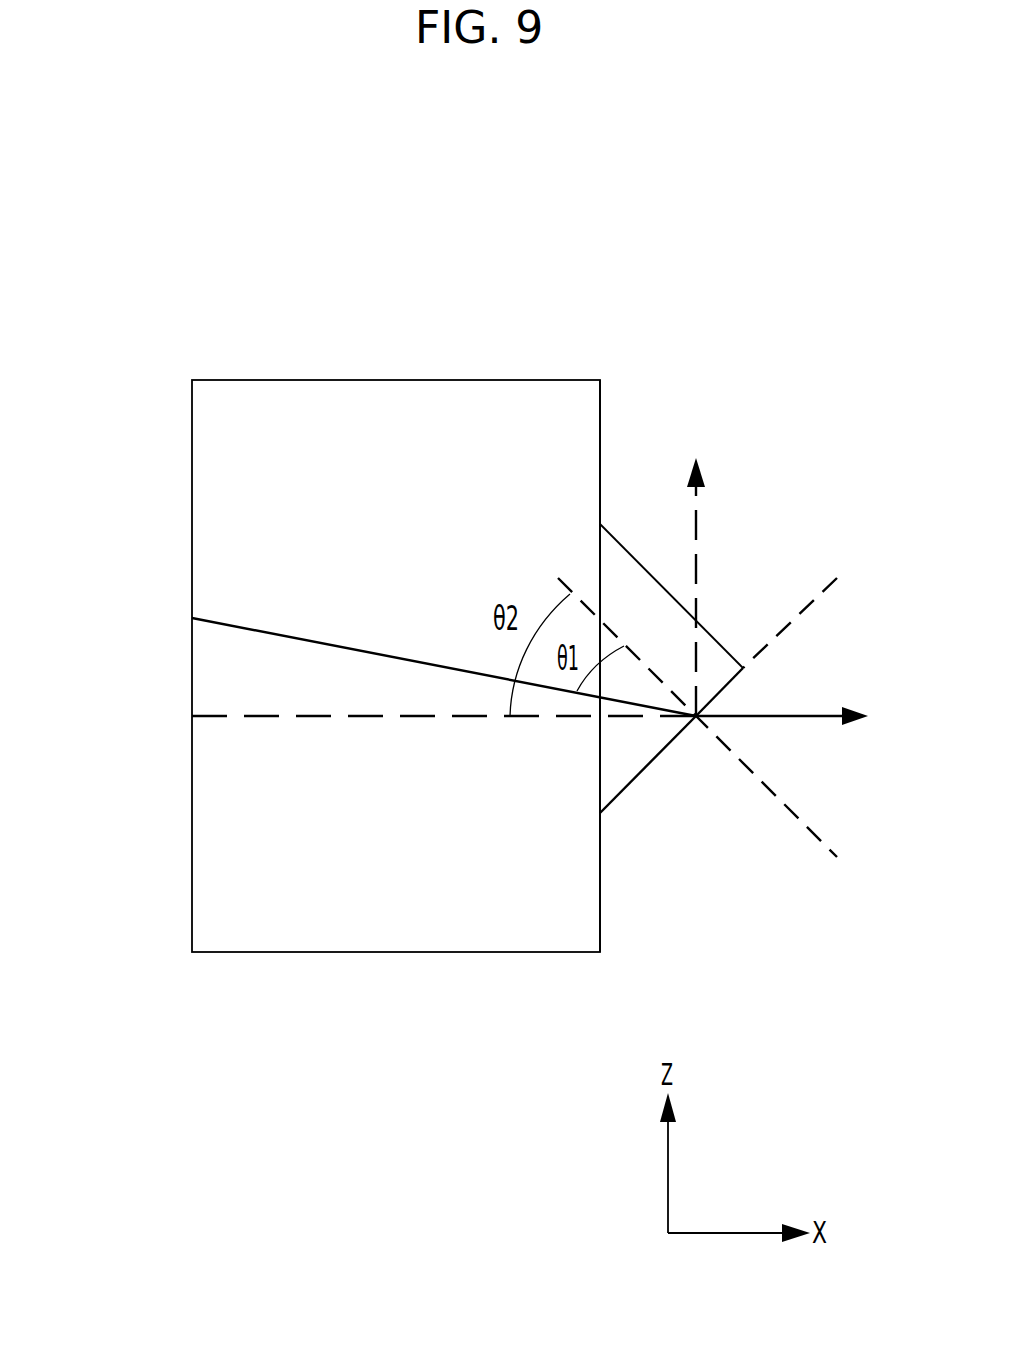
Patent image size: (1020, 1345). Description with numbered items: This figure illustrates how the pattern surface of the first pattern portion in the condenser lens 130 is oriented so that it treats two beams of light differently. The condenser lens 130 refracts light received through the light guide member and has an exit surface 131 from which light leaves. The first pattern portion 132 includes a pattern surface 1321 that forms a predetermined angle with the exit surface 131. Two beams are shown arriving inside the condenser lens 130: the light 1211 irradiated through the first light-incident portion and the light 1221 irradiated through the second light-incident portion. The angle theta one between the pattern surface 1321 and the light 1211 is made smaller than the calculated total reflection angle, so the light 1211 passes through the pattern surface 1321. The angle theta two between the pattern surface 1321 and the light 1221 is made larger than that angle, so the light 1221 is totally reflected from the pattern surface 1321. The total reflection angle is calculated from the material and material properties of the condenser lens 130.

The condenser lens 130 is at (266, 328).
The exit surface 131 is at (600, 422).
The first pattern portion 132 is at (710, 657).
The pattern surface 1321 is at (640, 777).
The light irradiated through the first light-incident portion 1211 is at (237, 624).
The light irradiated through the second light-incident portion 1221 is at (252, 716).